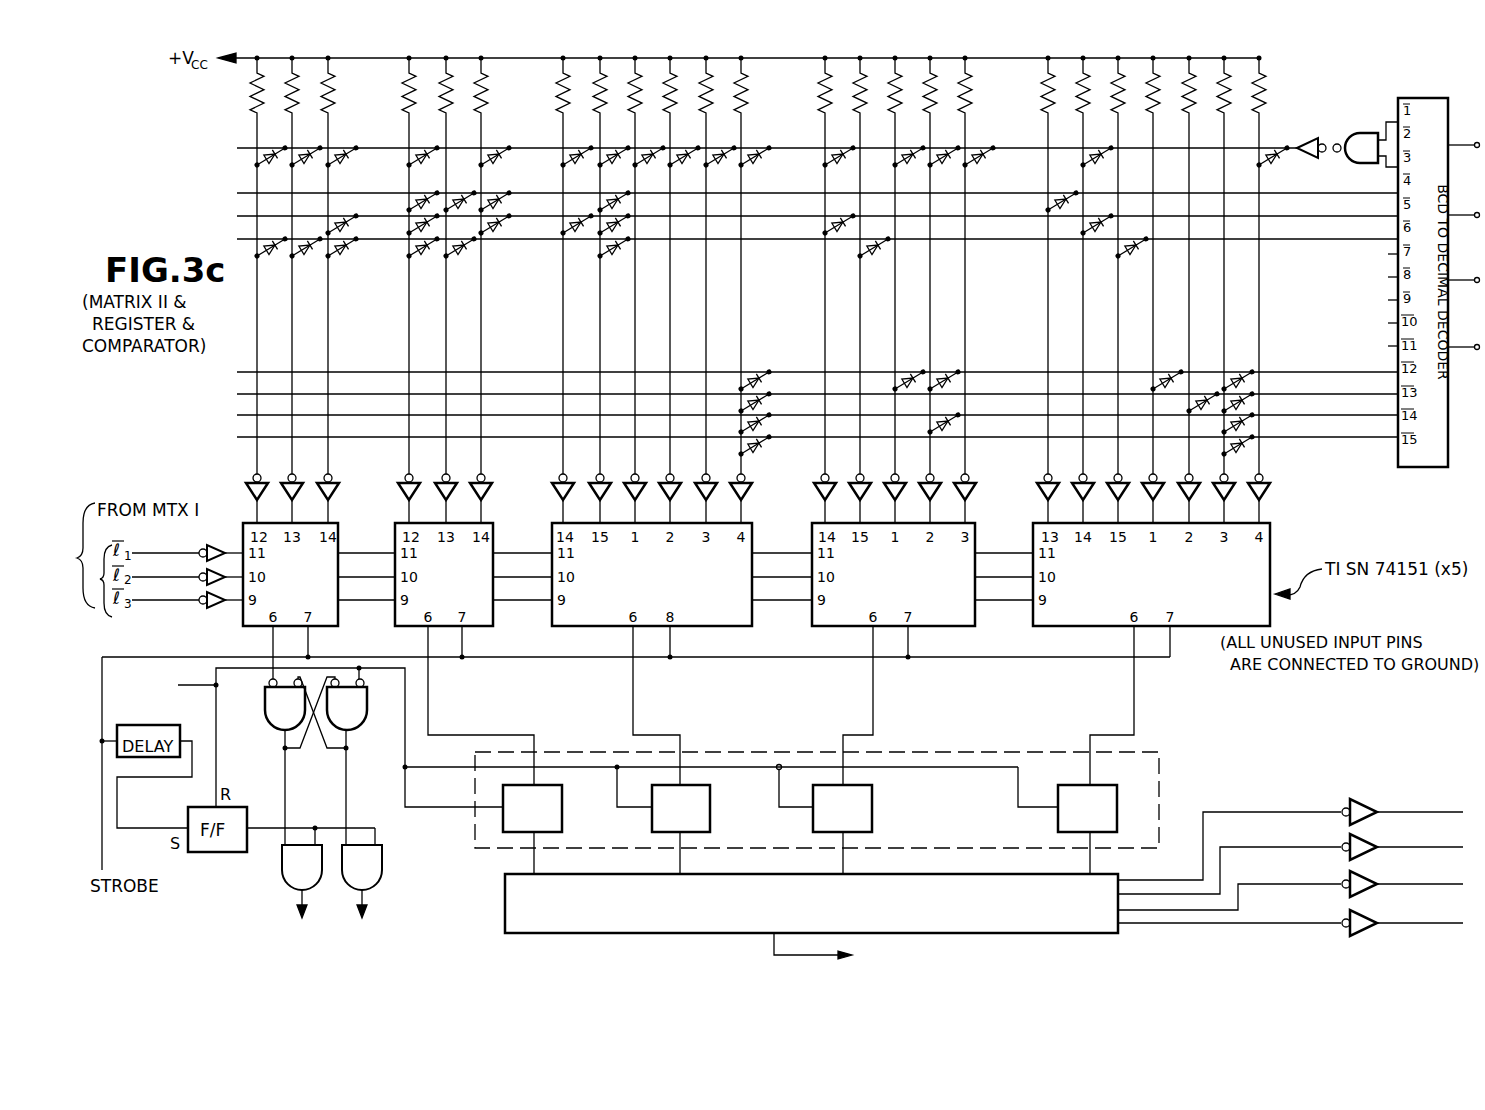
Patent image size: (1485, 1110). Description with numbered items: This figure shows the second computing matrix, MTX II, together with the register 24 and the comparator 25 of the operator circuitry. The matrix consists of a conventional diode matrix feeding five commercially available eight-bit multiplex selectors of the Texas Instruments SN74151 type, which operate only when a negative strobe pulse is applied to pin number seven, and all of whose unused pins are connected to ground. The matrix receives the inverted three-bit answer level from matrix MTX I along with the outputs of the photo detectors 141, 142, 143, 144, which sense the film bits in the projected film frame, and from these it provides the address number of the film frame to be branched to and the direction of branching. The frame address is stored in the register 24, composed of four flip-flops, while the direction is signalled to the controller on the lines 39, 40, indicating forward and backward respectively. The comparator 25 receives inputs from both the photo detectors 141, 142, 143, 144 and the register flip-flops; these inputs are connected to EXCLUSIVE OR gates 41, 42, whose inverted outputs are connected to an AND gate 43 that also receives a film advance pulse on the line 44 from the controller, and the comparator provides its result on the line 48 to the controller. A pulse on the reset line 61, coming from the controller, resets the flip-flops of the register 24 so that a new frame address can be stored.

The photo detector 141 is at (1428, 807).
The photo detector 142 is at (1426, 842).
The photo detector 143 is at (1428, 878).
The photo detector 144 is at (1428, 914).
The EXCLUSIVE OR gate 41 is at (1149, 878).
The EXCLUSIVE OR gate 42 is at (1130, 902).
The AND gate 43 is at (1158, 917).
The line 44 is at (1188, 928).
The register 24 is at (1161, 782).
The comparator 25 is at (811, 903).
The line 48 is at (828, 952).
The line 40 is at (305, 895).
The line 39 is at (365, 895).
The reset line 61 is at (188, 676).